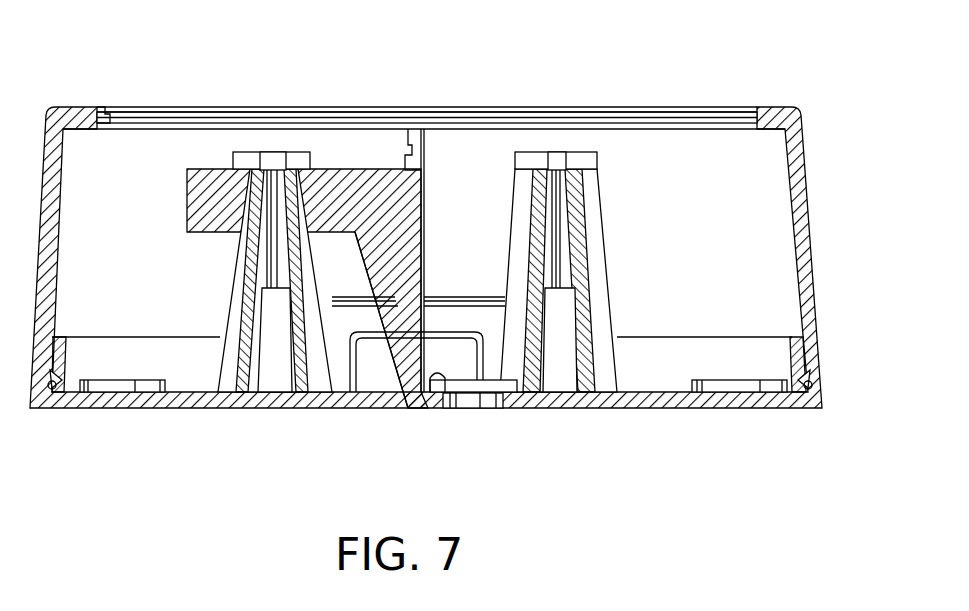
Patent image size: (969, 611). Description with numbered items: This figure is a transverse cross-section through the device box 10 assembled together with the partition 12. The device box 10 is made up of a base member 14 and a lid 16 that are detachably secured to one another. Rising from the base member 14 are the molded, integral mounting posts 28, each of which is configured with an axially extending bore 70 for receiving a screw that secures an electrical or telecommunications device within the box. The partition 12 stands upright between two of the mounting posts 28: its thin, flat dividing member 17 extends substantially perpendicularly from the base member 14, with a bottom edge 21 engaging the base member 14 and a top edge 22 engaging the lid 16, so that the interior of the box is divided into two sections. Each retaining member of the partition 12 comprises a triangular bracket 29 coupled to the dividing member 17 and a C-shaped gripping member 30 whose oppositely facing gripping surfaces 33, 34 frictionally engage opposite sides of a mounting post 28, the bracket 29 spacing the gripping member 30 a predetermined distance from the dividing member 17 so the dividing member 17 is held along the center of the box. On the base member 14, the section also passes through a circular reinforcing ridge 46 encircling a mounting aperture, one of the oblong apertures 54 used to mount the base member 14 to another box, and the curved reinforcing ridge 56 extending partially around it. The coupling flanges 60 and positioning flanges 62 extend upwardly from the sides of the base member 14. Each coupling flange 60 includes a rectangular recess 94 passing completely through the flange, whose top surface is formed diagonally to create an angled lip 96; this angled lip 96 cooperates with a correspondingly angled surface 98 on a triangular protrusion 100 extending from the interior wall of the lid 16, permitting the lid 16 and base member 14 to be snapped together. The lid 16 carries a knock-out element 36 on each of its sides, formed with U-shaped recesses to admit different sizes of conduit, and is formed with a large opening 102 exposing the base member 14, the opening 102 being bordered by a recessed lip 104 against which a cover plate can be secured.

The device box 10 is at (690, 95).
The partition 12 is at (432, 205).
The base member 14 is at (633, 388).
The lid 16 is at (808, 135).
The dividing member 17 is at (424, 232).
The bottom edge 21 is at (418, 410).
The top edge 22 is at (420, 118).
The mounting post 28 is at (222, 268).
The triangular bracket 29 is at (382, 278).
The C-shaped gripping member 30 is at (187, 203).
The gripping surface 33 is at (293, 186).
The gripping surface 34 is at (262, 186).
The knock-out element 36 is at (462, 332).
The circular reinforcing ridge 46 is at (152, 380).
The oblong aperture 54 is at (490, 410).
The curved reinforcing ridge 56 is at (430, 410).
The coupling flange 60 is at (58, 345).
The positioning flange 62 is at (195, 336).
The axially extending bore 70 is at (250, 156).
The rectangular recess 94 is at (52, 410).
The angled lip 96 is at (60, 385).
The angled surface 98 is at (62, 376).
The triangular protrusion 100 is at (62, 408).
The opening 102 is at (220, 116).
The lip 104 is at (104, 112).